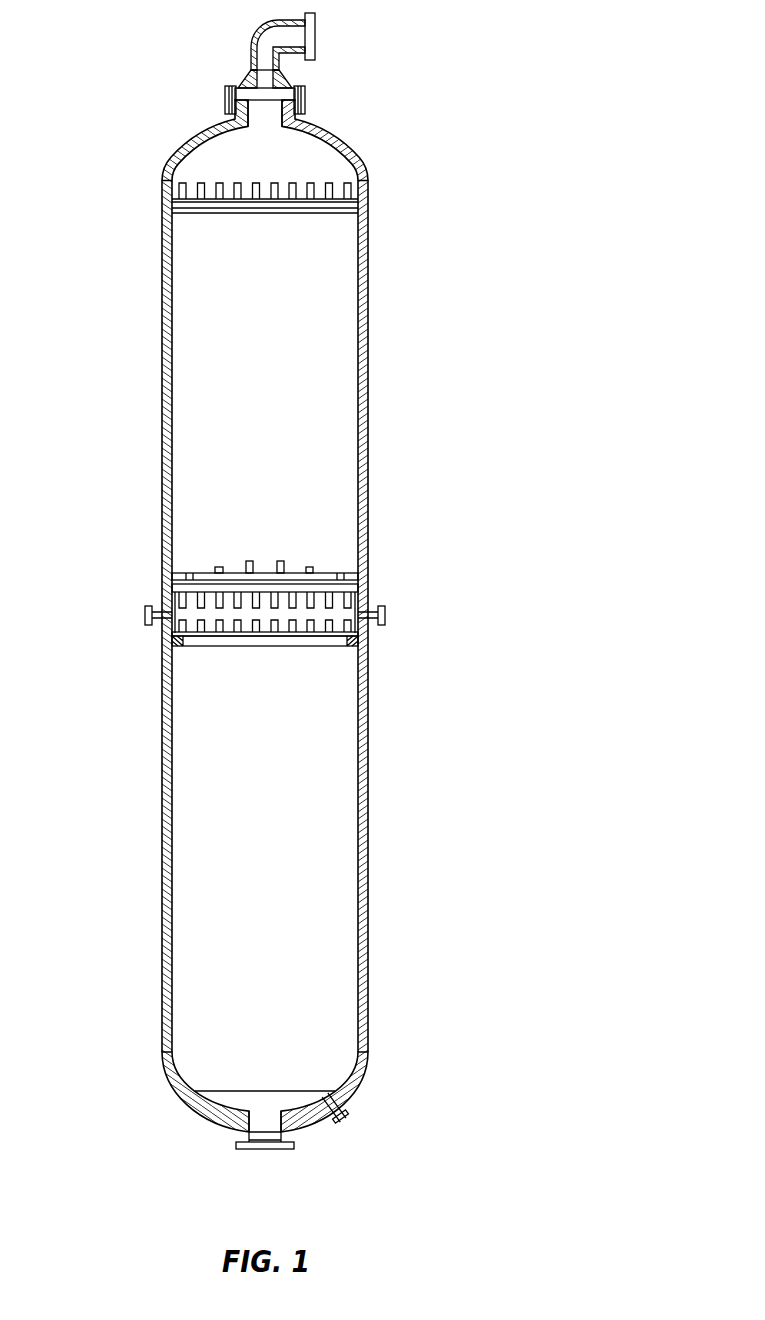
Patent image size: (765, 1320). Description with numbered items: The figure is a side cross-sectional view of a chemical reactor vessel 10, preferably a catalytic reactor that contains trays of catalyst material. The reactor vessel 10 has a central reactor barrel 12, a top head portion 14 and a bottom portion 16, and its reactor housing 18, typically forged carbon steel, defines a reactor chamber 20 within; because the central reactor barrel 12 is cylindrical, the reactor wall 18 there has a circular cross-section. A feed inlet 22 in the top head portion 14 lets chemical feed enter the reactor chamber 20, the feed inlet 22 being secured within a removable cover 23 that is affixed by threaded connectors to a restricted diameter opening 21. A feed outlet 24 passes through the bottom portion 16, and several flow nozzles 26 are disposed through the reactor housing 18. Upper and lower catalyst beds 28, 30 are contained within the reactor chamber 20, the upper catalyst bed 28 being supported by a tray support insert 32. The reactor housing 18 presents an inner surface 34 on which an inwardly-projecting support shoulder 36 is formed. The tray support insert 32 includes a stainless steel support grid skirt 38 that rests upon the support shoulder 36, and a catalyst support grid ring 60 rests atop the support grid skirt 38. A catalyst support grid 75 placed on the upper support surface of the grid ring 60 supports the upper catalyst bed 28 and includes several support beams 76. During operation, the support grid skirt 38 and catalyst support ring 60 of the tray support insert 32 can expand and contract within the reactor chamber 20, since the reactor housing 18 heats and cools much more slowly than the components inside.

The chemical reactor vessel 10 is at (272, 596).
The central reactor barrel 12 is at (259, 617).
The top head portion 14 is at (232, 140).
The bottom portion 16 is at (182, 1110).
The reactor housing 18 is at (369, 366).
The reactor chamber 20 is at (175, 327).
The restricted diameter opening 21 is at (250, 106).
The feed inlet 22 is at (273, 37).
The removable cover 23 is at (247, 83).
The feed outlet 24 is at (264, 1149).
The flow nozzles 26 is at (146, 613).
The upper catalyst bed 28 is at (280, 394).
The lower catalyst bed 30 is at (280, 884).
The tray support insert 32 is at (262, 599).
The inner surface 34 is at (354, 701).
The support shoulder 36 is at (176, 647).
The support grid skirt 38 is at (267, 615).
The catalyst support grid ring 60 is at (200, 573).
The catalyst support grid 75 is at (237, 562).
The support beams 76 is at (279, 561).